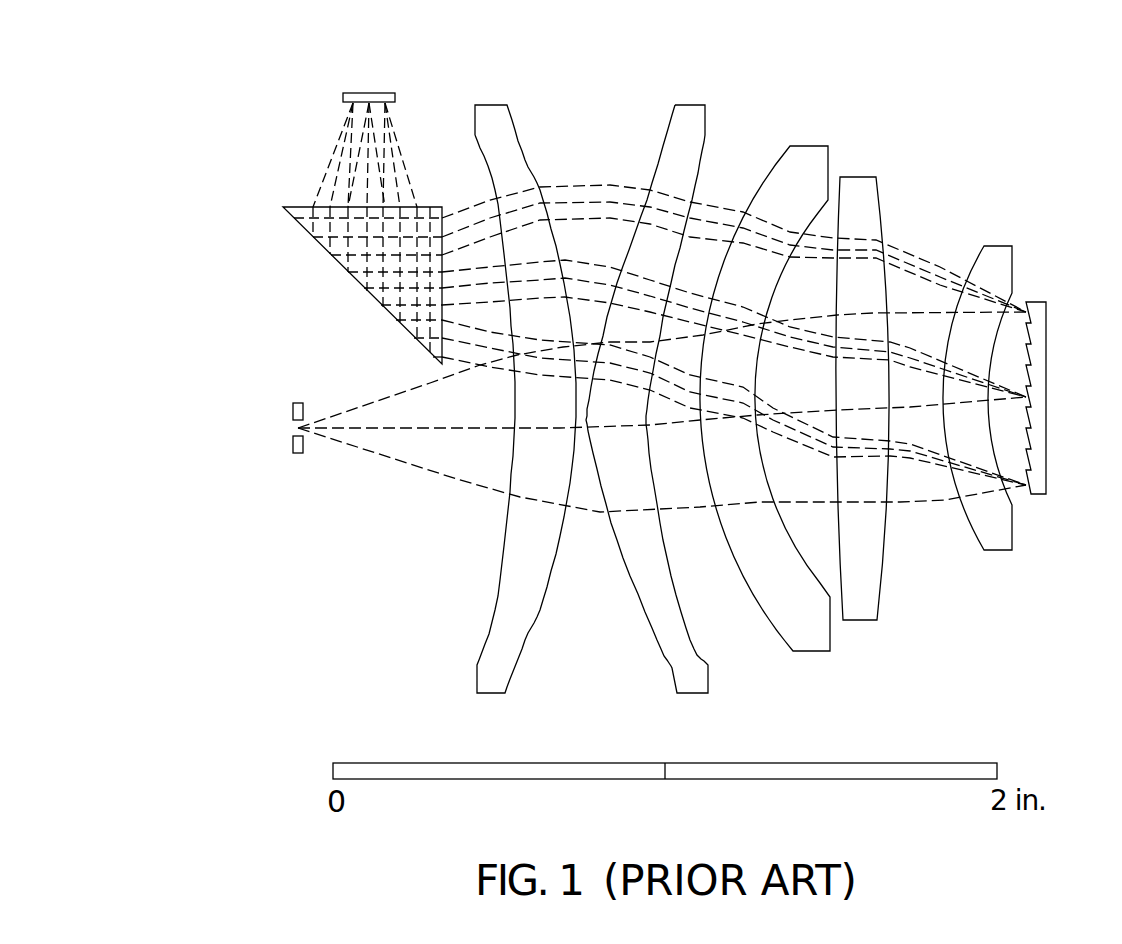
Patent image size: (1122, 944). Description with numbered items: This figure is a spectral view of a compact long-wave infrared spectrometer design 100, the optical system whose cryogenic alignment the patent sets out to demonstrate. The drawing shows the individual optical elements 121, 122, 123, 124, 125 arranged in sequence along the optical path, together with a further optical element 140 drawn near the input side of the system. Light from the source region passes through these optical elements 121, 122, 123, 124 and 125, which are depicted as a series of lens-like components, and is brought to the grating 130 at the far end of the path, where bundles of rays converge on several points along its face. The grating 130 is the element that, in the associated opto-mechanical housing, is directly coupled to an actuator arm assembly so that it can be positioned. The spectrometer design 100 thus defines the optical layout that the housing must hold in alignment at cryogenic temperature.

The spectrometer design 100 is at (184, 98).
The optical element 121 is at (488, 120).
The optical element 122 is at (691, 122).
The optical element 123 is at (810, 162).
The optical element 124 is at (862, 196).
The optical element 125 is at (1000, 263).
The grating 130 is at (1047, 316).
The optical element 140 is at (300, 206).